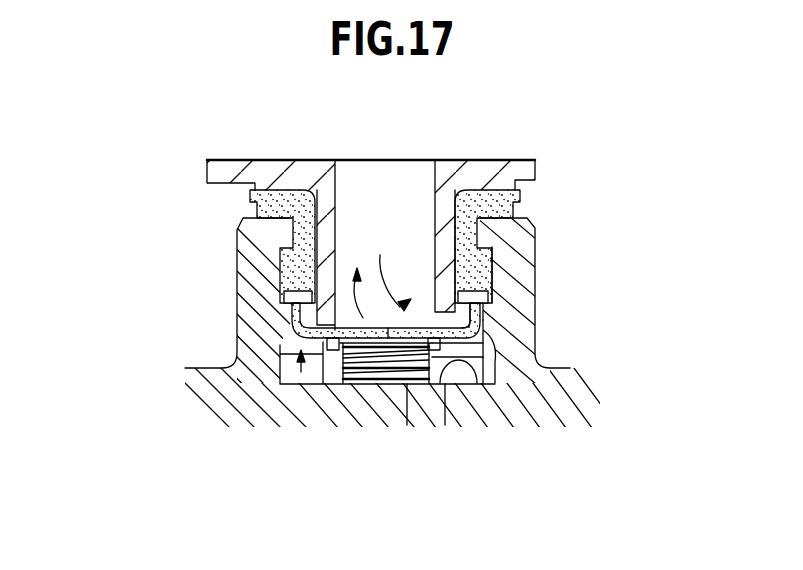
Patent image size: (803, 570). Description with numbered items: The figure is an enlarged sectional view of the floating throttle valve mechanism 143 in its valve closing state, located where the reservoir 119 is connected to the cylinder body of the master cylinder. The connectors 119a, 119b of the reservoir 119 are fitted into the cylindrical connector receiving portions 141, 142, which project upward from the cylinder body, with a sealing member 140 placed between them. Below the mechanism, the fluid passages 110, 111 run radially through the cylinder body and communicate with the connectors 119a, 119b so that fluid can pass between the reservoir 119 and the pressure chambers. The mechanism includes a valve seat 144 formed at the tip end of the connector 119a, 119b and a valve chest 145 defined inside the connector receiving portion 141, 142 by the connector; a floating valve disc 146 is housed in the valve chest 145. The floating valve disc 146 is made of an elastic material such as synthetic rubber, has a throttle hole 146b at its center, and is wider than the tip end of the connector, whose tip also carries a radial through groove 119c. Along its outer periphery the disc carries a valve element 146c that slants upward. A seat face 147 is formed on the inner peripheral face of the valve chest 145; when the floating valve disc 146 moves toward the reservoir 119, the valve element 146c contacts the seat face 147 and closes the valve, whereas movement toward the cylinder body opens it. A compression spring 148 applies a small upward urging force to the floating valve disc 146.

The reservoir 119 is at (483, 175).
The connector 119a is at (318, 265).
The connector 119b is at (385, 246).
The through groove 119c is at (482, 330).
The sealing member 140 is at (482, 293).
The connector receiving portion 141 is at (510, 264).
The connector receiving portion 142 is at (320, 294).
The floating throttle valve mechanism 143 is at (302, 387).
The valve seat 144 is at (318, 340).
The valve chest 145 is at (262, 378).
The floating valve disc 146 is at (282, 342).
The throttle hole 146b is at (361, 293).
The valve element 146c is at (575, 374).
The seat face 147 is at (510, 398).
The compression spring 148 is at (450, 402).
The fluid passage 110 is at (438, 403).
The fluid passage 111 is at (452, 398).